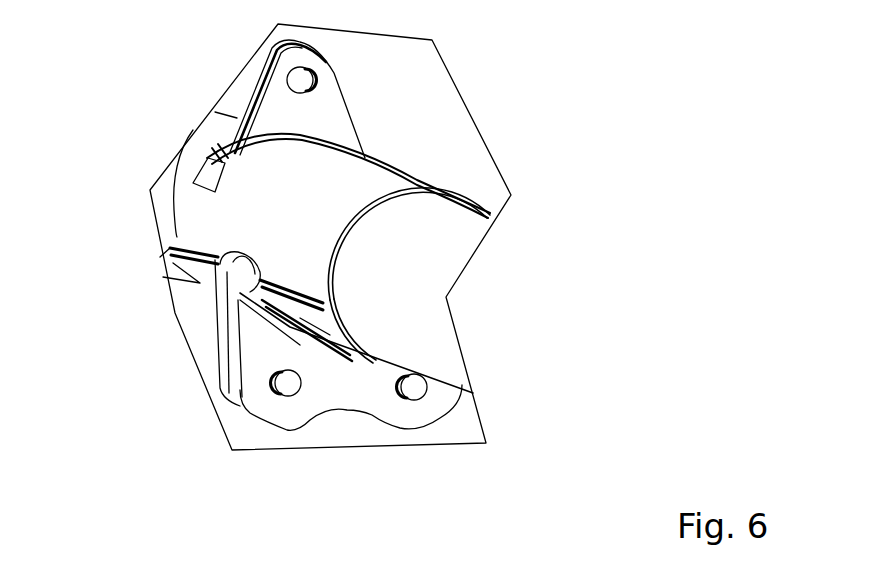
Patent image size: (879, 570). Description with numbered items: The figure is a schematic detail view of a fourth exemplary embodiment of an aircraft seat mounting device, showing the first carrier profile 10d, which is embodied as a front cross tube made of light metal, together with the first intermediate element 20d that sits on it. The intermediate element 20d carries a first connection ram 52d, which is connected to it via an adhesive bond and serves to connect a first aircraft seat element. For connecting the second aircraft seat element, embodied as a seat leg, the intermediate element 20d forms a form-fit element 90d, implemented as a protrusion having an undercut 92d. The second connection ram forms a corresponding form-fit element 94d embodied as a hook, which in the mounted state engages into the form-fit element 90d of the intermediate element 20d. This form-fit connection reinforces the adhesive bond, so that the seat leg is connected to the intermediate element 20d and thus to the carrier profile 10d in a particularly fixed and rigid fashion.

The first carrier profile 10d is at (458, 225).
The first intermediate element 20d is at (385, 190).
The first connection ram 52d is at (243, 87).
The form-fit element 90d is at (335, 323).
The undercut 92d is at (325, 314).
The form-fit element 94d is at (262, 275).